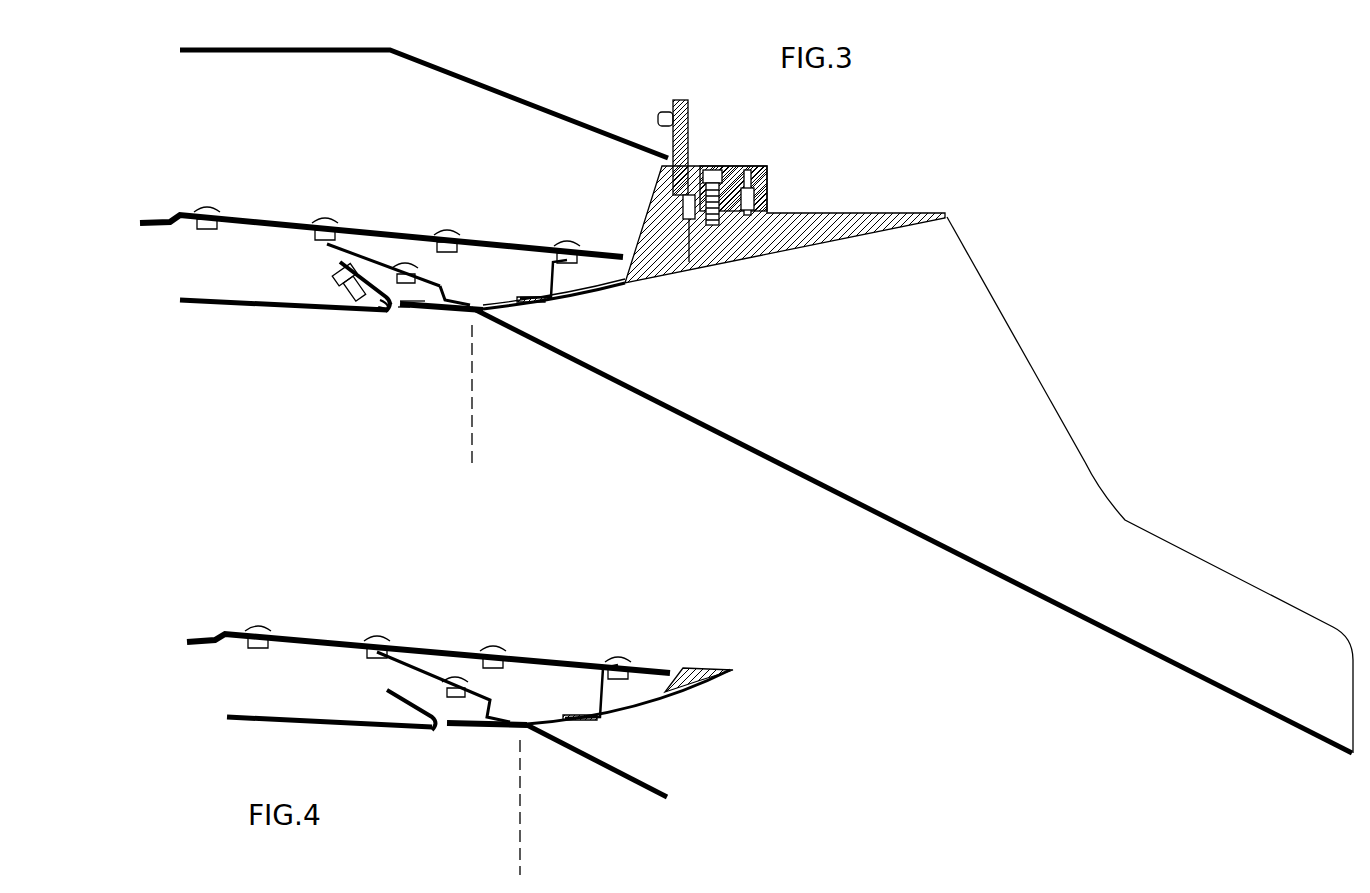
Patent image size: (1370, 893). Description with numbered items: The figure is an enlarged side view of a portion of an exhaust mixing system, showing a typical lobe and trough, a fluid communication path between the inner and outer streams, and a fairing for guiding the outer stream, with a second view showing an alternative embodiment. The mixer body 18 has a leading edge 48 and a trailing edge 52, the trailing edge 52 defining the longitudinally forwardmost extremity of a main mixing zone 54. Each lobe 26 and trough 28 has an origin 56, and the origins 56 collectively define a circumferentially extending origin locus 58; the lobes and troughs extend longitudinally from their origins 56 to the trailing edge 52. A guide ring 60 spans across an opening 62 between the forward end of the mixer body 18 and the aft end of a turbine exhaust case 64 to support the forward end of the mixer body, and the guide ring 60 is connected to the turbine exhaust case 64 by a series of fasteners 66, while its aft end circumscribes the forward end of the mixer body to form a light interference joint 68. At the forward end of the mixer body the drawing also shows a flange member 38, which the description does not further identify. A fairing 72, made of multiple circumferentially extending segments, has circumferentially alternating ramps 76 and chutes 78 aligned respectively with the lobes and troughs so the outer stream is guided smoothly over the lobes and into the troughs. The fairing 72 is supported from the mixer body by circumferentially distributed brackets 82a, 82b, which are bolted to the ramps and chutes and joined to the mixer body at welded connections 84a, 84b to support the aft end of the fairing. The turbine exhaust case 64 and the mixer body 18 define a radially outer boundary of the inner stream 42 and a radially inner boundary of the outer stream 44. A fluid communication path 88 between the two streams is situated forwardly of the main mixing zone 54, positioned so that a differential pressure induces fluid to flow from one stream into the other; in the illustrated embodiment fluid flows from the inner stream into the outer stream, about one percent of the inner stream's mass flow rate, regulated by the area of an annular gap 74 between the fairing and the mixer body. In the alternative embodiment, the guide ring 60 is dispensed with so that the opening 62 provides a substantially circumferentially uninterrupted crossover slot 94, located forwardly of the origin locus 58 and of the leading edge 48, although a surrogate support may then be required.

In FIG. 3, the mixer body 18 is at (1100, 218).
In FIG. 3, the lobe 26 is at (928, 212).
In FIG. 3, the trough 28 is at (905, 522).
In FIG. 3, the flange 38 is at (662, 190).
In FIG. 3, the inner stream 42 is at (268, 381).
In FIG. 3, the outer stream 44 is at (445, 110).
In FIG. 3, the leading edge 48 is at (400, 316).
In FIG. 3, the trailing edge 52 is at (1090, 463).
In FIG. 3, the main mixing zone 54 is at (1115, 327).
In FIG. 3, the origin 56 is at (482, 315).
In FIG. 4, the origin 56 is at (523, 732).
In FIG. 3, the origin locus 58 is at (473, 405).
In FIG. 4, the origin locus 58 is at (521, 808).
In FIG. 3, the guide ring 60 is at (368, 282).
In FIG. 3, the opening 62 is at (386, 305).
In FIG. 3, the turbine exhaust case 64 is at (203, 303).
In FIG. 3, the fasteners 66 is at (332, 274).
In FIG. 3, the light interference joint 68 is at (414, 310).
In FIG. 3, the fairing 72 is at (360, 226).
In FIG. 3, the annular gap 74 is at (600, 337).
In FIG. 3, the ramps 76 is at (510, 243).
In FIG. 4, the ramps 76 is at (557, 660).
In FIG. 3, the chutes 78 is at (380, 246).
In FIG. 4, the chutes 78 is at (425, 670).
In FIG. 3, the bracket 82a is at (548, 290).
In FIG. 3, the bracket 82b is at (460, 268).
In FIG. 3, the welded connection 84a is at (525, 308).
In FIG. 3, the welded connection 84b is at (455, 300).
In FIG. 3, the fluid communication path 88 is at (375, 318).
In FIG. 4, the fluid communication path 88 is at (428, 728).
In FIG. 4, the crossover slot 94 is at (445, 730).